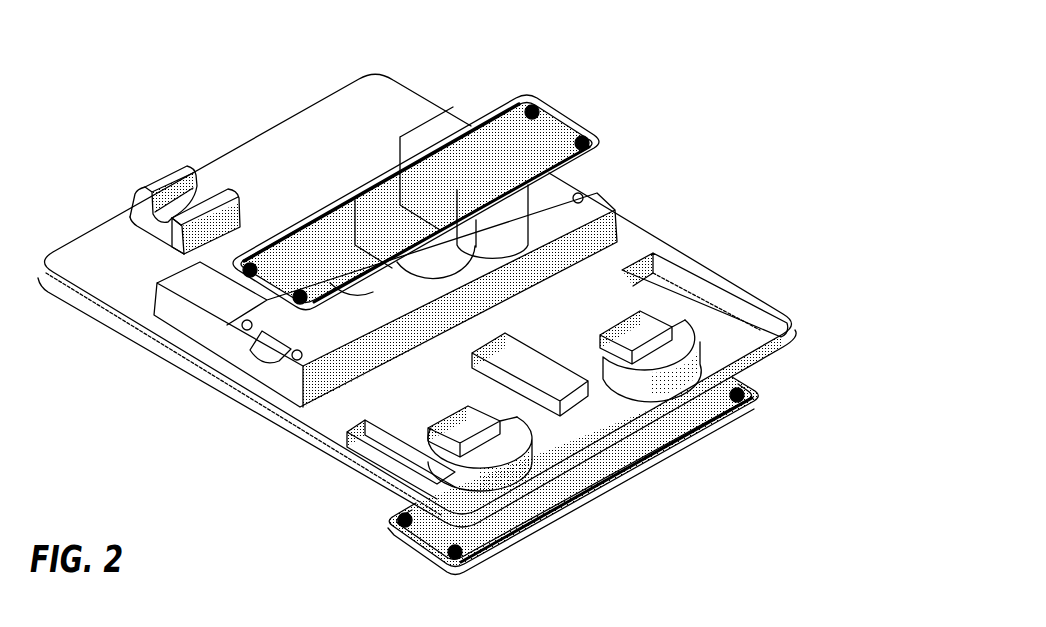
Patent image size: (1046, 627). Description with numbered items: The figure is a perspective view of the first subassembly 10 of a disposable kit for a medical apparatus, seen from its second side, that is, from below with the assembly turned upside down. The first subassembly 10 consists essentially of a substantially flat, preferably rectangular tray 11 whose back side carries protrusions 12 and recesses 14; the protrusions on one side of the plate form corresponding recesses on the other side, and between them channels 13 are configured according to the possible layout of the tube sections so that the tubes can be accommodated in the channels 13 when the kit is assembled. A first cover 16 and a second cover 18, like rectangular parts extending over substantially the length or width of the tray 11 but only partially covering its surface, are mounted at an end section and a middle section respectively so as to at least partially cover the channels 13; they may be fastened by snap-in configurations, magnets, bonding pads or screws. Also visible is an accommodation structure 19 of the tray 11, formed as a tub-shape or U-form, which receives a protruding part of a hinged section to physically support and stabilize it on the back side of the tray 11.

The first subassembly 10 is at (647, 180).
The tray 11 is at (420, 96).
The protrusions 12 is at (223, 340).
The channels 13 is at (487, 232).
The recesses 14 is at (665, 272).
The first cover 16 is at (440, 530).
The second cover 18 is at (548, 130).
The accommodation structure 19 is at (165, 188).